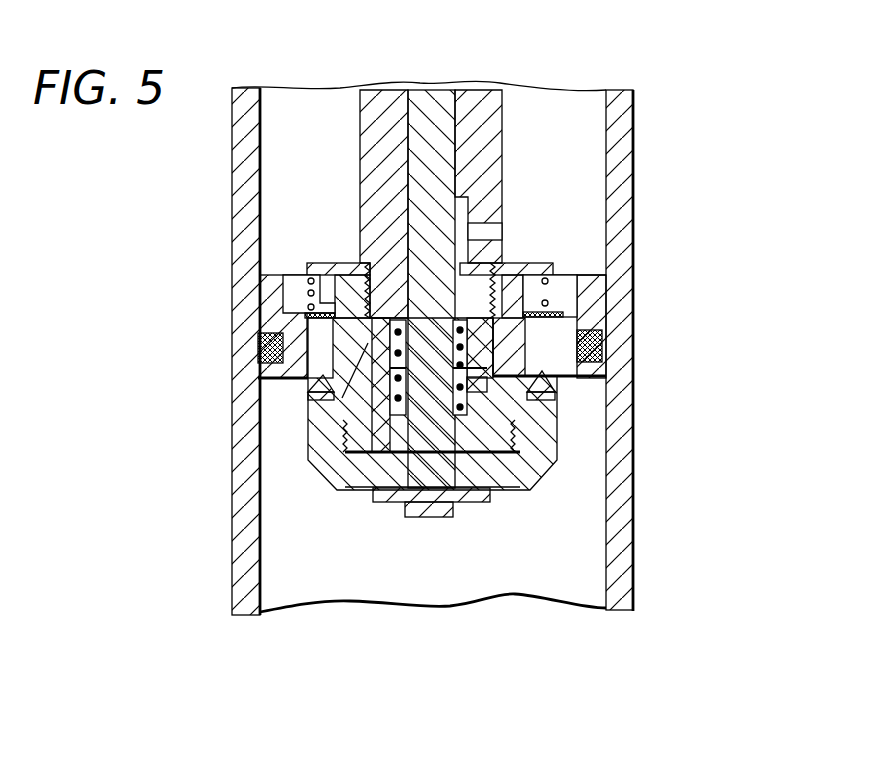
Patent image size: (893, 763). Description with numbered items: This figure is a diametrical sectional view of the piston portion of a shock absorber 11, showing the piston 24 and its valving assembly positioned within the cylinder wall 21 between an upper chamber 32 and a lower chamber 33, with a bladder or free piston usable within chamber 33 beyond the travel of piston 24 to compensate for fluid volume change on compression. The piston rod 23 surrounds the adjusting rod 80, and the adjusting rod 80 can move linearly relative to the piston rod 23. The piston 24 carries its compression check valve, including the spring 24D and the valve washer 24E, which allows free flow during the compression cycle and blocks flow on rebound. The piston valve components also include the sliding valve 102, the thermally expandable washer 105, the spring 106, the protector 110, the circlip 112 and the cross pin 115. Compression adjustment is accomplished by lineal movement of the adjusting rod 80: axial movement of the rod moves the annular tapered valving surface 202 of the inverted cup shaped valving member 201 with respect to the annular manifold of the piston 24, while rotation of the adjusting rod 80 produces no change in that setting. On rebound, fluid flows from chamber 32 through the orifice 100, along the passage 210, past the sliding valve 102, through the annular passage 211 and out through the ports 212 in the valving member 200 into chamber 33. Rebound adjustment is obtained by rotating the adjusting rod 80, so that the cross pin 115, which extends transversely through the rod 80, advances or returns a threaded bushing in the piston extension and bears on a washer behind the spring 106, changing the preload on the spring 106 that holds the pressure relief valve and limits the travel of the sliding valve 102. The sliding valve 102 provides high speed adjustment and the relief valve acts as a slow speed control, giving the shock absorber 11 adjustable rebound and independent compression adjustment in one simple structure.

The valve housing 11 is at (637, 103).
The housing wall 21 is at (236, 360).
The chamber 32 is at (562, 118).
The chamber 33 is at (588, 582).
The adjusting rod 80 is at (415, 139).
The piston rod 23 is at (372, 195).
The orifice 100 is at (492, 233).
The passage 210 is at (500, 257).
The sliding valve 102 is at (565, 280).
The piston 24 is at (608, 298).
The spring 24D is at (290, 282).
The valve washer 24E is at (302, 313).
The thermally expandable washer 105 is at (493, 365).
The spring 106 is at (472, 392).
The protector 110 is at (522, 406).
The annular tapered valving surface 202 is at (318, 386).
The inverted cup shaped valving member 201 is at (330, 415).
The annular passage 211 is at (377, 437).
The valving member 200 is at (345, 478).
The circlip 112 is at (530, 452).
The ports 212 is at (365, 492).
The cross pin 115 is at (458, 505).